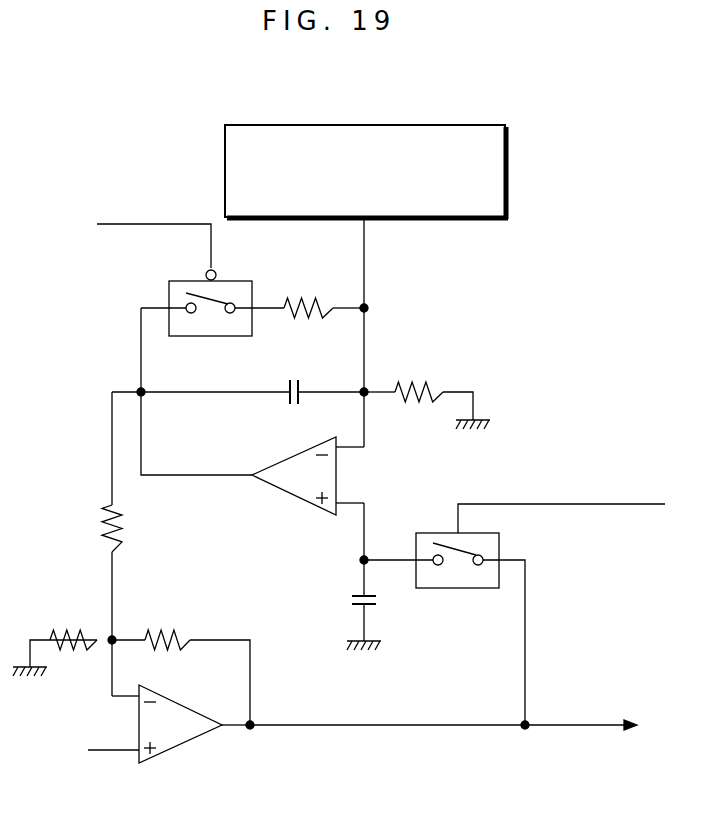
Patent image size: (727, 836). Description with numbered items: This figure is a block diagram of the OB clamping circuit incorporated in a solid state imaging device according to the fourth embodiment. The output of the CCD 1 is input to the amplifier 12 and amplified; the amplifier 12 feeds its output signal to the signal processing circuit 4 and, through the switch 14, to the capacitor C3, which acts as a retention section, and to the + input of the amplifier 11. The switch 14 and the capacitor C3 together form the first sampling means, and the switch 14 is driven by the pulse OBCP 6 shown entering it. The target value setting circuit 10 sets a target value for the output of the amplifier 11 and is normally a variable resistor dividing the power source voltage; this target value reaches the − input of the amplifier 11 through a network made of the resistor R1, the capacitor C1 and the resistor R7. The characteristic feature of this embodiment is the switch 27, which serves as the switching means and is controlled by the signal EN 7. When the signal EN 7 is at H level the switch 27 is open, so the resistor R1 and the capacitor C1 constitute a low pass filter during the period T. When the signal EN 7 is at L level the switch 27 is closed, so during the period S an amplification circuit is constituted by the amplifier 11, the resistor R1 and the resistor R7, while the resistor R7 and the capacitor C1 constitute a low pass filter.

The target value setting circuit 10 is at (508, 137).
The switch 27 is at (233, 276).
The amplifier 11 is at (291, 482).
The switch 14 is at (473, 589).
The amplifier 12 is at (173, 745).
The signal processing circuit 4 is at (443, 766).
The resistor R7 is at (324, 294).
The resistor R1 is at (427, 390).
The capacitor C1 is at (238, 378).
The capacitor C3 is at (340, 621).
The signal EN 7 EN7 is at (123, 241).
The optical black clamp pulse OBCP6 is at (561, 506).
The CCD CCD1 is at (73, 753).